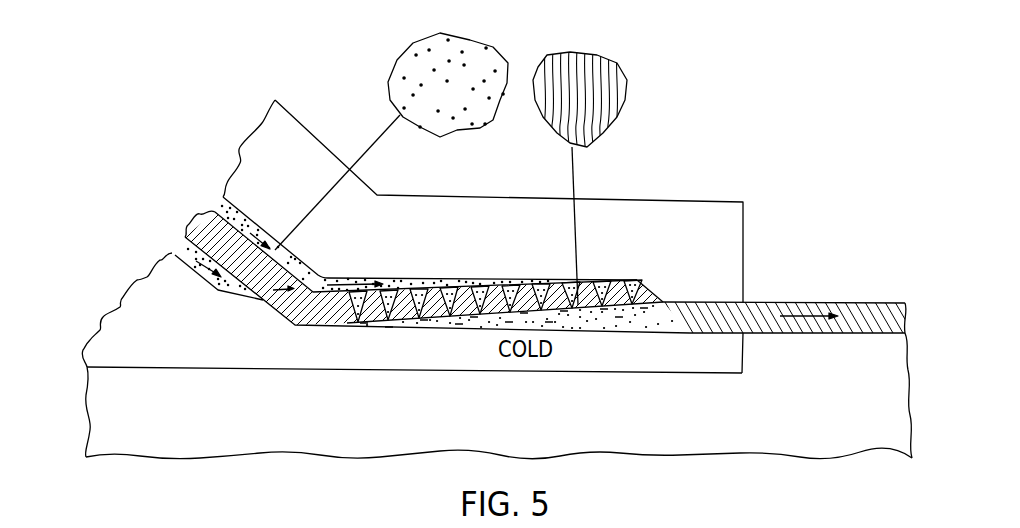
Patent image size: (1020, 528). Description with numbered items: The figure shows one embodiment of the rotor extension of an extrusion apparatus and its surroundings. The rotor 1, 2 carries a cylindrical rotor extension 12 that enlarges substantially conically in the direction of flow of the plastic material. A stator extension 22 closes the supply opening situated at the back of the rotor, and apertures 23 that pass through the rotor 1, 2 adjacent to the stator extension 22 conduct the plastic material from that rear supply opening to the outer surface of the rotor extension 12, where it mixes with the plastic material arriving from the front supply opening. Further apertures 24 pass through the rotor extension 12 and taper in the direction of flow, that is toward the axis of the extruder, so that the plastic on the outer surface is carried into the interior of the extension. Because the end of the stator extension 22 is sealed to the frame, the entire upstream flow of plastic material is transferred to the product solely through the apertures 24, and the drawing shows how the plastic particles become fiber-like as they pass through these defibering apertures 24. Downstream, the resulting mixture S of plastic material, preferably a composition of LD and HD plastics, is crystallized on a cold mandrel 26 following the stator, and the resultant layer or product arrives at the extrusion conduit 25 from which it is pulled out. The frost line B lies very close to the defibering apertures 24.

The rotor 1 is at (227, 281).
The rotor 2 is at (227, 281).
The rotor extension 12 is at (454, 322).
The stator extension 22 is at (256, 323).
The apertures 23 is at (328, 270).
The apertures 24 is at (532, 286).
The extrusion conduit 25 is at (756, 296).
The cold mandrel 26 is at (485, 364).
The mixture of plastic material S is at (640, 290).
The frost line B is at (572, 336).
The HD plastic HD is at (499, 68).
The LD plastic LD is at (474, 52).